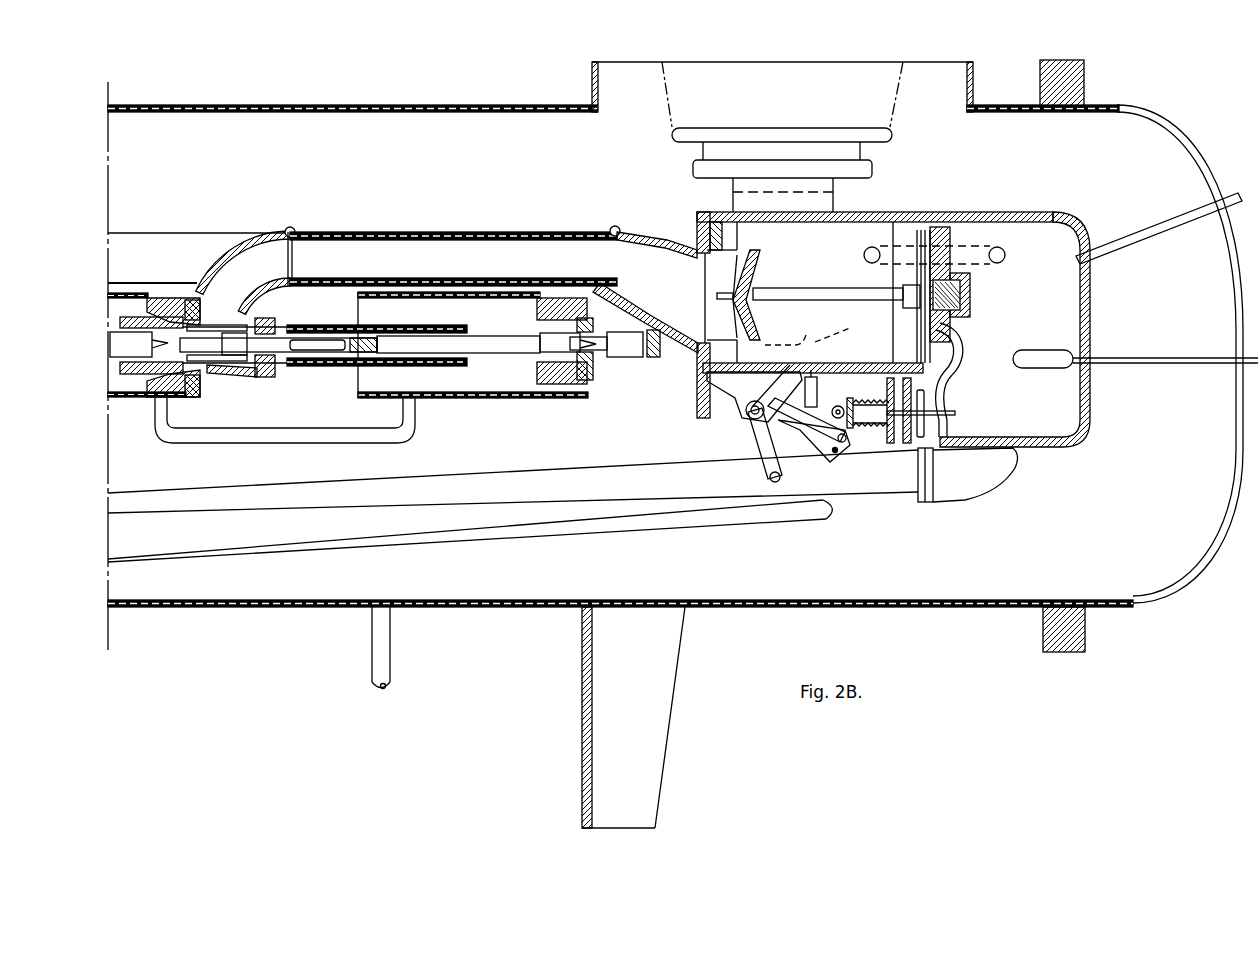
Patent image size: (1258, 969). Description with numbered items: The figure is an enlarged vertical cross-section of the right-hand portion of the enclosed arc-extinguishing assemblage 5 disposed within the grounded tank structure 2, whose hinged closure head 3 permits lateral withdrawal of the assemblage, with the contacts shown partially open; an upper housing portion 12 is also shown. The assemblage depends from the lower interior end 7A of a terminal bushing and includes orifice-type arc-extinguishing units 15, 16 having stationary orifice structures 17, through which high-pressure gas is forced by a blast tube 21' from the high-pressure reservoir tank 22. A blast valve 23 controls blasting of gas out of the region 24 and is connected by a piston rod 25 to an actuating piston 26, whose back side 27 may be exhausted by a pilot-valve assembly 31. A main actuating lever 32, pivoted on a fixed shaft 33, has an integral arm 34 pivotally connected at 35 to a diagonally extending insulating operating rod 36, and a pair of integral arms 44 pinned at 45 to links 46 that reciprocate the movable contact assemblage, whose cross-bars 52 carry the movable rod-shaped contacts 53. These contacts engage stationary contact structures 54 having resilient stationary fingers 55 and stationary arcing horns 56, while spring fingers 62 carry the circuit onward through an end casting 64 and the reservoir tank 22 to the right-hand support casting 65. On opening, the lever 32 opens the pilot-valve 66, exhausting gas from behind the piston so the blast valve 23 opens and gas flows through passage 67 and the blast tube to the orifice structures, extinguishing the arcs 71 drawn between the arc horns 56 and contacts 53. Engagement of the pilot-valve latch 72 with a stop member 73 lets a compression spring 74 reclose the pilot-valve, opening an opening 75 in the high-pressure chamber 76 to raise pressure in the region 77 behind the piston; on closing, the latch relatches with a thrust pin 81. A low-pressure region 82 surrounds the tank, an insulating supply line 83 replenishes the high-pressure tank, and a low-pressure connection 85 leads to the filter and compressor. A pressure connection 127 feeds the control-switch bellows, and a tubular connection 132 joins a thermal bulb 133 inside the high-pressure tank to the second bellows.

The tank structure 2 is at (532, 608).
The hinged closure head 3 is at (1160, 595).
The arc-extinguishing assemblage 5 is at (220, 232).
The lower interior end of terminal bushing 7A is at (692, 168).
The housing step 12 is at (592, 88).
The arc-extinguishing unit 15 is at (160, 274).
The arc-extinguishing unit 16 is at (479, 438).
The stationary orifice structure 17 is at (522, 318).
The blast tube 21' is at (455, 248).
The high-pressure reservoir tank 22 is at (909, 204).
The blast valve 23 is at (750, 285).
The region 24 is at (834, 280).
The piston rod 25 is at (848, 300).
The actuating piston 26 is at (935, 240).
The back side of actuating piston 27 is at (953, 338).
The pilot-valve assembly 31 is at (813, 461).
The main actuating lever 32 is at (752, 455).
The fixed shaft 33 is at (738, 418).
The integral arm 34 is at (787, 468).
The pivotal connection 35 is at (769, 479).
The insulating operating rod 36 is at (462, 476).
The integral arm 44 is at (822, 366).
The pin 45 is at (830, 340).
The link 46 is at (796, 337).
The cross-bar 52 is at (379, 344).
The movable rod-shaped contact 53 is at (116, 352).
The stationary contact structure 54 is at (234, 332).
The resilient stationary finger 55 is at (215, 375).
The stationary arcing horn 56 is at (207, 375).
The spring finger 62 is at (438, 324).
The end casting 64 is at (690, 402).
The support casting 65 is at (732, 196).
The pilot-valve 66 is at (926, 402).
The passage 67 is at (628, 306).
The arc 71 is at (160, 344).
The pilot-valve latch 72 is at (834, 404).
The stop member 73 is at (800, 395).
The compression spring 74 is at (862, 401).
The opening 75 is at (956, 414).
The high-pressure chamber 76 is at (1061, 325).
The region 77 is at (991, 382).
The thrust pin 81 is at (806, 421).
The low-pressure region 82 is at (535, 582).
The insulating supply line 83 is at (334, 537).
The low-pressure connection 85 is at (392, 650).
The pressure connection 127 is at (1155, 222).
The tubular connection 132 is at (1160, 360).
The thermal bulb 133 is at (1025, 368).